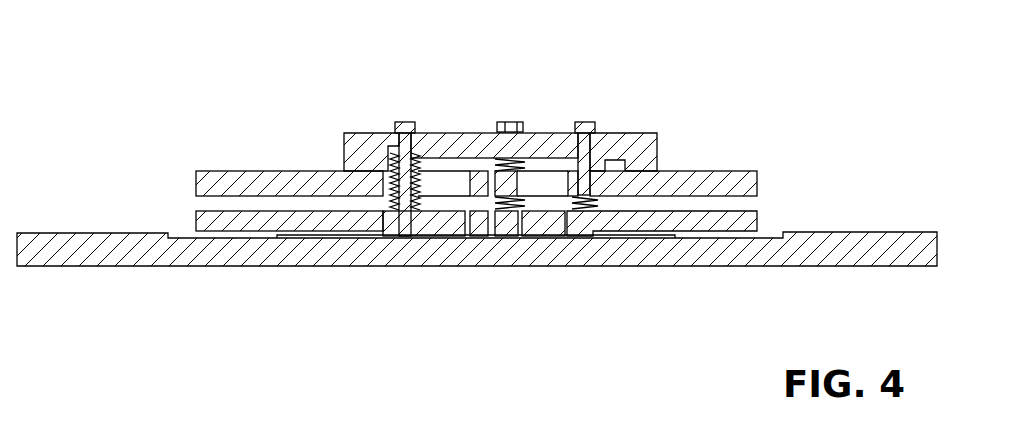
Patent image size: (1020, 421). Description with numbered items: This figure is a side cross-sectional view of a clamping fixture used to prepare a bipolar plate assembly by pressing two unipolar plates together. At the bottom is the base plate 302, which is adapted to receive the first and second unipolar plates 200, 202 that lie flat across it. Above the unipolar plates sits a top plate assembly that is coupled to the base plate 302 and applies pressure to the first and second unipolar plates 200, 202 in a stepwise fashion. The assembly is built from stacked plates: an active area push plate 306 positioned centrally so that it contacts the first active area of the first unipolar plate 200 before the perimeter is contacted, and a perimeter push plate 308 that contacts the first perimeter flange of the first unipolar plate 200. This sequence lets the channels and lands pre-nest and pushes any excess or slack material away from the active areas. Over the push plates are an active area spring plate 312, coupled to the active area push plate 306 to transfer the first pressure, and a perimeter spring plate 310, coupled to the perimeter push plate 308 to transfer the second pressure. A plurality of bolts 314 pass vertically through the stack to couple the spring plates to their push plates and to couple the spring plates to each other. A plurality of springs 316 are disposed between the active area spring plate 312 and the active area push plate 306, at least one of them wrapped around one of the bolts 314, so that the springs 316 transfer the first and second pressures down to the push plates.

The first unipolar plate 200 is at (477, 274).
The second unipolar plate 202 is at (650, 237).
The base plate 302 is at (285, 133).
The active area push plate 306 is at (437, 227).
The perimeter push plate 308 is at (747, 222).
The perimeter spring plate 310 is at (747, 183).
The active area spring plate 312 is at (643, 145).
The bolts 314 is at (586, 122).
The springs 316 is at (377, 165).